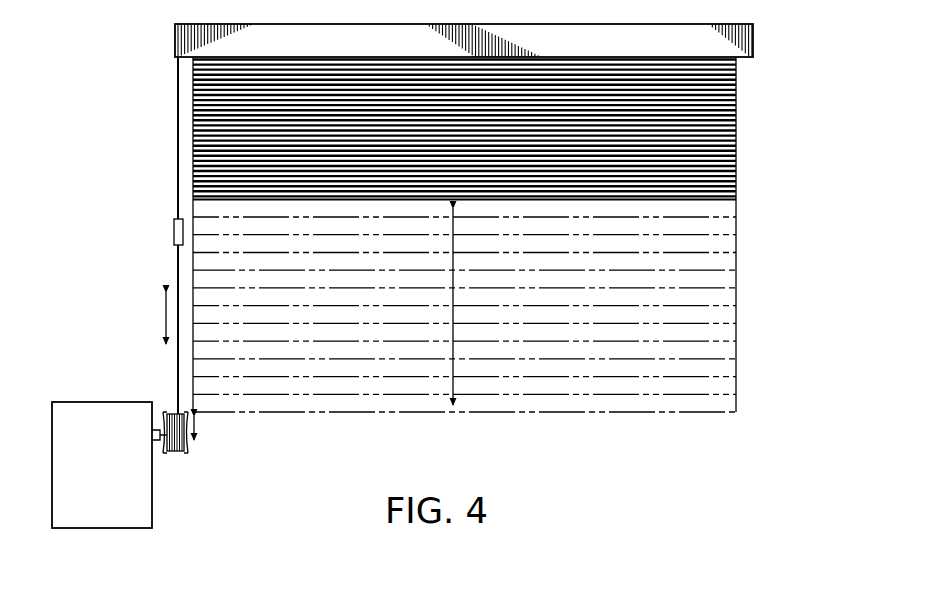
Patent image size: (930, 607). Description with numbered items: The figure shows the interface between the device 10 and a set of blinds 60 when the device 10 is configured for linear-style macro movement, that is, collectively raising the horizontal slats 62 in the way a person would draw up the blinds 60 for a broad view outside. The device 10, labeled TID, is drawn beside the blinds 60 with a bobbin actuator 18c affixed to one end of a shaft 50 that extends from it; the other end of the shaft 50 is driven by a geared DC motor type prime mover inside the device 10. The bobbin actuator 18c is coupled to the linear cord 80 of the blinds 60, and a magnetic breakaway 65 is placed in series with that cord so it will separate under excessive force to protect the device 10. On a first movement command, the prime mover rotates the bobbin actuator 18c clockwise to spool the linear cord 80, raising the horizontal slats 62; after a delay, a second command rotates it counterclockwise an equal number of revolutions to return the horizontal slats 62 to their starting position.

The blinds 60 is at (114, 66).
The horizontal slats 62 is at (736, 195).
The magnetic breakaway 65 is at (174, 232).
The linear cord 80 is at (178, 270).
The device 10 is at (72, 398).
The shaft 50 is at (157, 441).
The bobbin actuator 18c is at (186, 452).